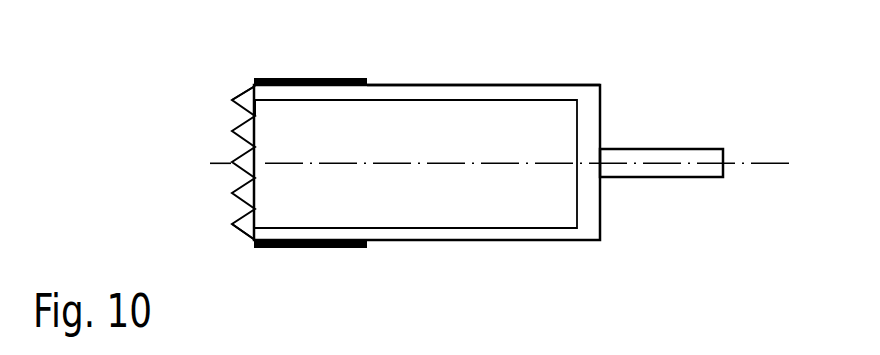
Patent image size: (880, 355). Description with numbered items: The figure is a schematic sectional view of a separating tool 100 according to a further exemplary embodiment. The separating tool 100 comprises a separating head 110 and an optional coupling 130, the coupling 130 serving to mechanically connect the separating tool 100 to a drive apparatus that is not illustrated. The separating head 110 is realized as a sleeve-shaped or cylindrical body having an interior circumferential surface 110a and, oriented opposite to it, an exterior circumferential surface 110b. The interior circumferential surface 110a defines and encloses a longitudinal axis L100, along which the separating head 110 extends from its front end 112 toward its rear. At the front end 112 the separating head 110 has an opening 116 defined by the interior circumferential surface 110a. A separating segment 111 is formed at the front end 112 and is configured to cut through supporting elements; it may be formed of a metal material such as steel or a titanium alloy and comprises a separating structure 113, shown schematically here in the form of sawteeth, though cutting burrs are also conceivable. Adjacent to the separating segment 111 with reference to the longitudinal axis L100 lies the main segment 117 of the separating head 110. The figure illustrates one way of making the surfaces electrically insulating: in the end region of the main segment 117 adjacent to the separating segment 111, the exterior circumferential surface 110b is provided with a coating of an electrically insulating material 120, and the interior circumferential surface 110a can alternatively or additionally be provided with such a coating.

The separating tool 100 is at (701, 81).
The separating head 110 is at (317, 99).
The interior circumferential surface 110a is at (398, 102).
The exterior circumferential surface 110b is at (423, 84).
The separating segment 111 is at (238, 238).
The front end 112 is at (228, 196).
The separating structure 113 is at (252, 87).
The opening 116 is at (268, 101).
The main segment 117 is at (457, 246).
The electrically insulating material 120 is at (331, 250).
The coupling 130 is at (646, 148).
The longitudinal axis L100 is at (773, 161).